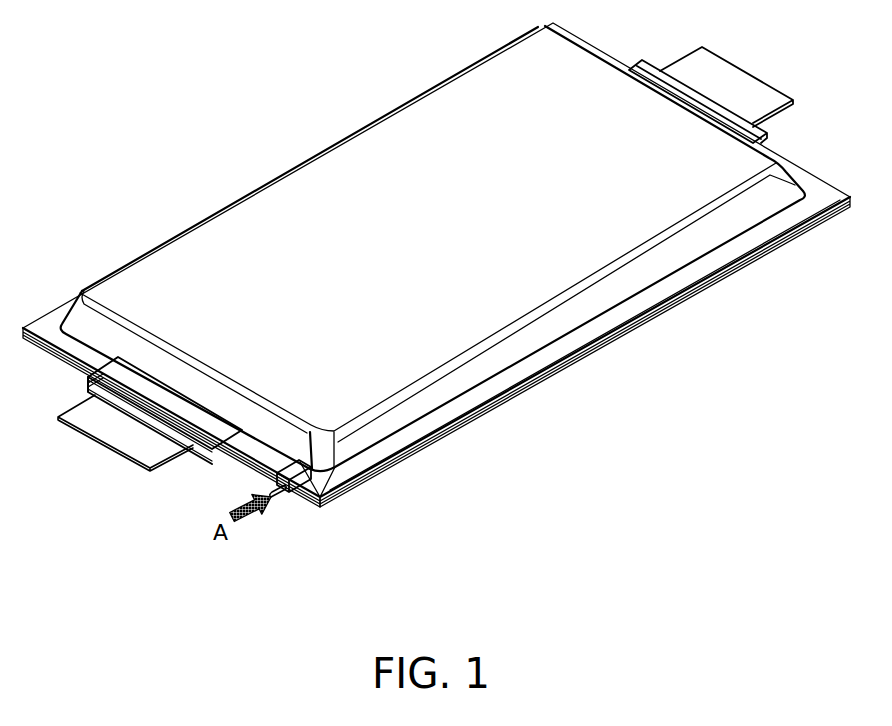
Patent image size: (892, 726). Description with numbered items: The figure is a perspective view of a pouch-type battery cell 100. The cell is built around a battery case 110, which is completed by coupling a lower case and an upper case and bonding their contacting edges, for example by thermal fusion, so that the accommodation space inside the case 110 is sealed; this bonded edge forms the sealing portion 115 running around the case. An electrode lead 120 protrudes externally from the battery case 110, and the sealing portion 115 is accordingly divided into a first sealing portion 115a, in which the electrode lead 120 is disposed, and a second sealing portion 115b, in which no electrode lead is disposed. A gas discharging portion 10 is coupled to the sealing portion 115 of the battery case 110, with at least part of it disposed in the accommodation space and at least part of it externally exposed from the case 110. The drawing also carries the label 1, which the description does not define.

The battery cell 100 is at (297, 100).
The pouch case 1 is at (638, 303).
The battery case 110 is at (176, 263).
The electrode lead 120 is at (128, 435).
The gas discharging portion 10 is at (276, 498).
The sealing portion 115 is at (485, 527).
The first sealing portion 115a is at (310, 480).
The second sealing portion 115b is at (373, 457).